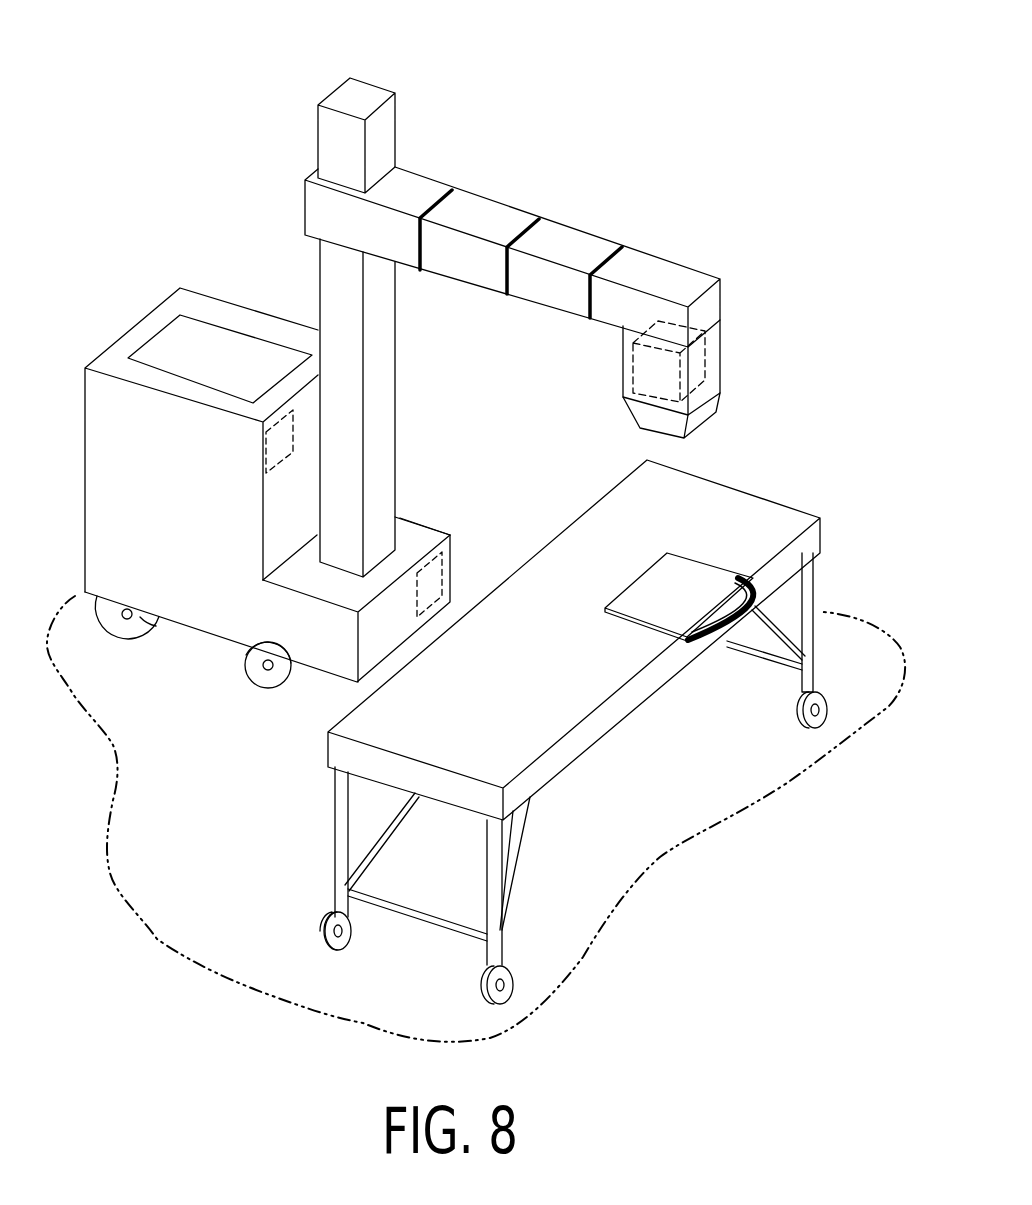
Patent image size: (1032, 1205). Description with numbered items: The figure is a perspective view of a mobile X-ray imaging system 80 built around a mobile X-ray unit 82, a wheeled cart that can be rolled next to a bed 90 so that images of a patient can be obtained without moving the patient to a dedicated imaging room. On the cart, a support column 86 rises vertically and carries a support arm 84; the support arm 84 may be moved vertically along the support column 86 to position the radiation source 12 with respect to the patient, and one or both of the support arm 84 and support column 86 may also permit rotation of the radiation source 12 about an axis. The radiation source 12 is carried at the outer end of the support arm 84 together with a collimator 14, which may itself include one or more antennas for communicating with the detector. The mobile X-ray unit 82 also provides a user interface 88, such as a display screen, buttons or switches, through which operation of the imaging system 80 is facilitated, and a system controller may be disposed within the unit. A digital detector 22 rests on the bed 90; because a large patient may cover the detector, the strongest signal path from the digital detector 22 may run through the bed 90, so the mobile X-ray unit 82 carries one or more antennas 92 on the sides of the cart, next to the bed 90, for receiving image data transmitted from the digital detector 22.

The mobile X-ray imaging system 80 is at (779, 63).
The mobile X-ray unit 82 is at (220, 623).
The support arm 84 is at (582, 238).
The support column 86 is at (327, 145).
The user interface 88 is at (170, 343).
The bed 90 is at (795, 515).
The antennas 92 is at (265, 458).
The radiation source 12 is at (705, 340).
The collimator 14 is at (668, 425).
The digital detector 22 is at (658, 575).